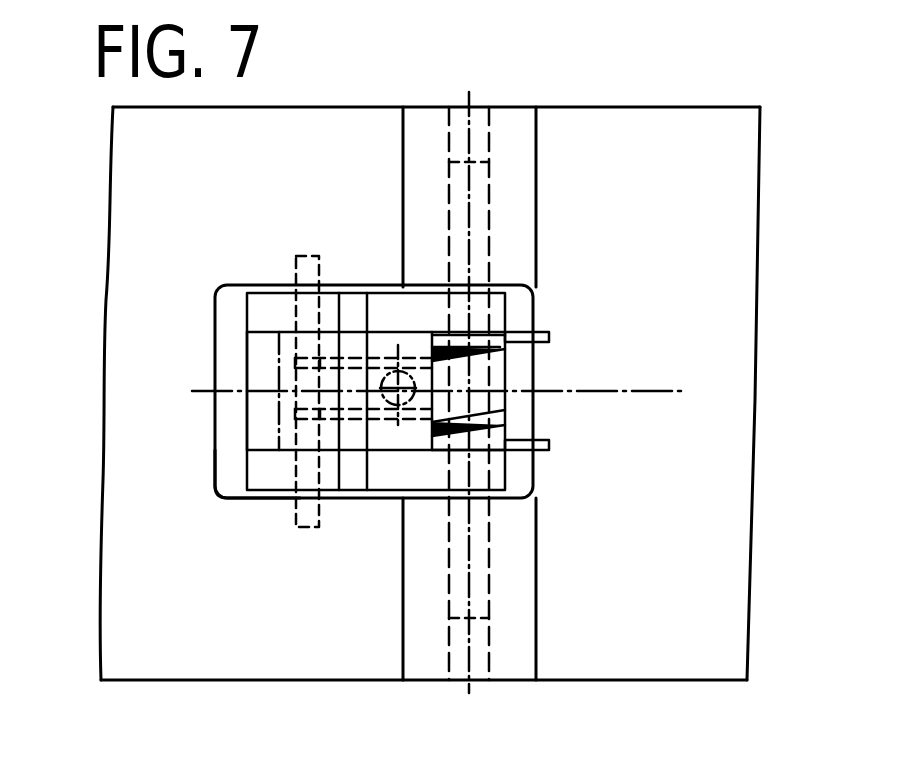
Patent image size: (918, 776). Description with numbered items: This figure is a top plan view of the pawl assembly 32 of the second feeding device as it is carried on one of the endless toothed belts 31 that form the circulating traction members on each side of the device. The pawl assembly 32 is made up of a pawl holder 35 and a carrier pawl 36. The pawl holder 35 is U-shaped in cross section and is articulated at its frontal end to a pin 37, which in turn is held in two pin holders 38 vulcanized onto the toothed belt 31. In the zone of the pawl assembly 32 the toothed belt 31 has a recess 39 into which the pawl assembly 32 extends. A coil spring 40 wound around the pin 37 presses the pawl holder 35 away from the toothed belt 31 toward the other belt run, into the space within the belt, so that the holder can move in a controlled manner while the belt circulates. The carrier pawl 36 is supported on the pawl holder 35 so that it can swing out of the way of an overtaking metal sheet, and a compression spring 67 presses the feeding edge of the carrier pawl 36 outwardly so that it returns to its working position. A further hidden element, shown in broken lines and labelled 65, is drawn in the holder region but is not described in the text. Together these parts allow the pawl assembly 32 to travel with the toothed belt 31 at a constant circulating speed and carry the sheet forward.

The toothed belt 31 is at (686, 558).
The pawl assembly 32 is at (242, 437).
The pawl holder 35 is at (390, 468).
The carrier pawl 36 is at (258, 418).
The pin 37 is at (489, 198).
The pin holder 38 is at (422, 198).
The recess 39 is at (227, 478).
The coil spring 40 is at (507, 360).
The screw 65 is at (298, 255).
The compression spring 67 is at (394, 368).